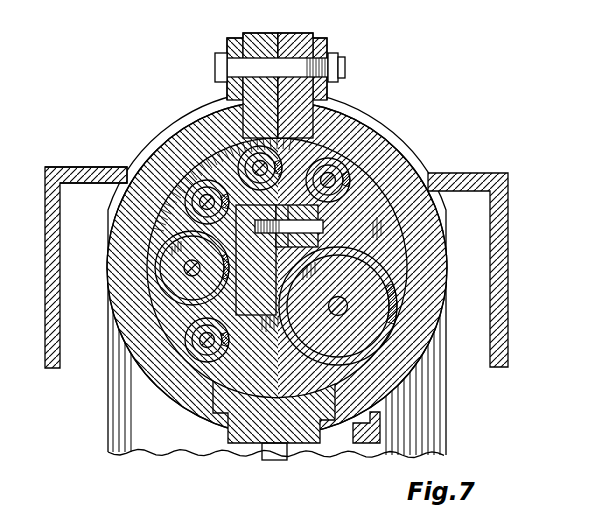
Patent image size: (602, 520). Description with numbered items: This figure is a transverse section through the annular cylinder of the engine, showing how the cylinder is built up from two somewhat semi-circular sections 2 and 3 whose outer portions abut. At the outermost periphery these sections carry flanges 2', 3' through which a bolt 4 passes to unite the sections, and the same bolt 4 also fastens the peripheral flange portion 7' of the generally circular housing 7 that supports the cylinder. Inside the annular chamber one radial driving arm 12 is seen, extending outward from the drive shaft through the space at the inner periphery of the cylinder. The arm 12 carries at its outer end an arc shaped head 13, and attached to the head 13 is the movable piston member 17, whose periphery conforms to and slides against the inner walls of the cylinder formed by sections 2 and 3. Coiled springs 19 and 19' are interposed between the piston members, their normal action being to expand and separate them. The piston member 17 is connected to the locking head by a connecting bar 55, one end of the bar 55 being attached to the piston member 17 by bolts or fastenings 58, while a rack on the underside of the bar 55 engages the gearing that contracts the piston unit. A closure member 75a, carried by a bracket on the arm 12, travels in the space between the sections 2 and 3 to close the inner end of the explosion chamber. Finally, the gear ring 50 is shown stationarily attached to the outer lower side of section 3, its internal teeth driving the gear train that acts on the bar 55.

The cylinder section 2 is at (248, 276).
The cylinder section 3 is at (298, 278).
The flange 2' is at (252, 75).
The flange 3' is at (302, 75).
The bolt 4 is at (215, 68).
The housing 7 is at (69, 267).
The peripheral flange portion 7' is at (86, 166).
The movable piston member 17 is at (413, 158).
The coiled spring 19 is at (262, 254).
The coiled spring 19' is at (327, 306).
The bolt 58 is at (298, 211).
The connecting bar 55 is at (323, 237).
The arc shaped head 13 is at (257, 314).
The closure member 75a is at (287, 405).
The radial driving arm 12 is at (255, 452).
The gear ring 50 is at (382, 416).